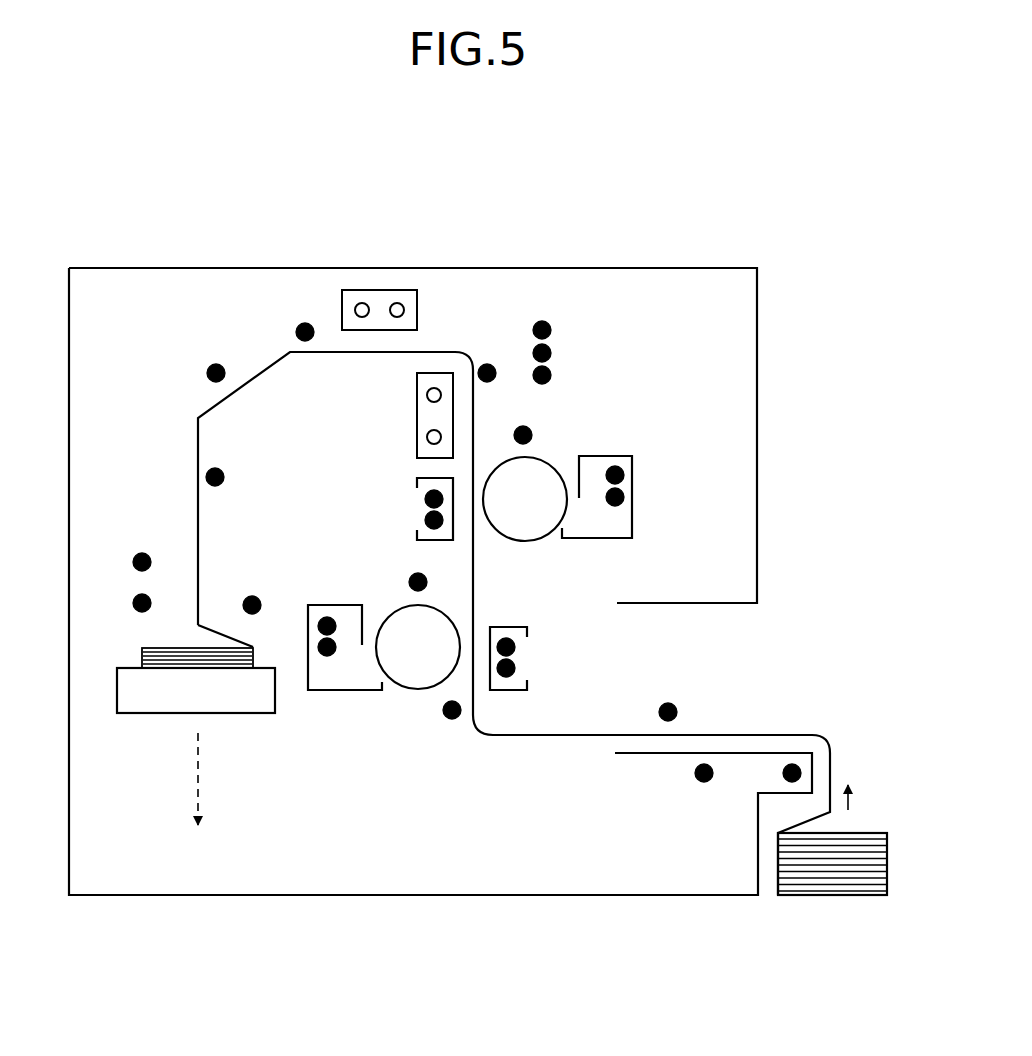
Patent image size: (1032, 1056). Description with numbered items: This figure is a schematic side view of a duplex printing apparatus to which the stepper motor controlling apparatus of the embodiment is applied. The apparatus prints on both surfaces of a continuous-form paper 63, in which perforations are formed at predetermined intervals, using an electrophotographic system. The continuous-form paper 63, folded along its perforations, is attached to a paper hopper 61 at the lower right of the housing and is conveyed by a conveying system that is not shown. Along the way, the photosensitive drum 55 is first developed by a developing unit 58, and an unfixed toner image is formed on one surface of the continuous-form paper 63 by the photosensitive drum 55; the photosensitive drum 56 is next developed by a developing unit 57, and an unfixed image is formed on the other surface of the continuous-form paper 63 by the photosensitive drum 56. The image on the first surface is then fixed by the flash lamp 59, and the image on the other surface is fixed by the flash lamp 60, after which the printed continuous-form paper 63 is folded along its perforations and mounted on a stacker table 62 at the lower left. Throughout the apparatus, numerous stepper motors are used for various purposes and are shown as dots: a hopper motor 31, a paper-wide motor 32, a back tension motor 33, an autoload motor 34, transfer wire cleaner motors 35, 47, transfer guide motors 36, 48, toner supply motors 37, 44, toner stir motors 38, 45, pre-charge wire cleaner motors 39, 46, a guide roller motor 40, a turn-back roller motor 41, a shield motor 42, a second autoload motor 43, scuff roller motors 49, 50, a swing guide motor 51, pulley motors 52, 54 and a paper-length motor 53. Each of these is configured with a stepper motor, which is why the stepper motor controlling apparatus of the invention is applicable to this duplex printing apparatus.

The hopper motor 31 is at (794, 765).
The paper-wide motor 32 is at (702, 781).
The back tension motor 33 is at (668, 704).
The autoload motor 34 is at (460, 712).
The transfer wire cleaner motor 35 is at (514, 669).
The transfer guide motor 36 is at (514, 647).
The toner supply motor 37 is at (623, 498).
The toner stir motor 38 is at (623, 476).
The pre-charge wire cleaner motor 39 is at (531, 434).
The guide roller motor 40 is at (550, 376).
The turn-back roller motor 41 is at (550, 353).
The shield motor 42 is at (550, 330).
The autoload motor 43 is at (487, 366).
The toner supply motor 44 is at (320, 646).
The toner stir motor 45 is at (327, 620).
The pre-charge wire cleaner motor 46 is at (412, 580).
The transfer wire cleaner motor 47 is at (426, 520).
The transfer guide motor 48 is at (427, 498).
The scuff roller motor 49 is at (305, 328).
The scuff roller motor 50 is at (216, 370).
The swing guide motor 51 is at (215, 474).
The pulley motor 52 is at (252, 600).
The paper-length motor 53 is at (140, 558).
The pulley motor 54 is at (138, 601).
The photosensitive drum 55 is at (410, 688).
The photosensitive drum 56 is at (490, 523).
The developing unit 57 is at (627, 455).
The developing unit 58 is at (312, 693).
The flash lamp 59 is at (417, 432).
The flash lamp 60 is at (380, 290).
The paper hopper 61 is at (781, 905).
The stacker table 62 is at (233, 713).
The continuous-form paper 63 is at (770, 733).